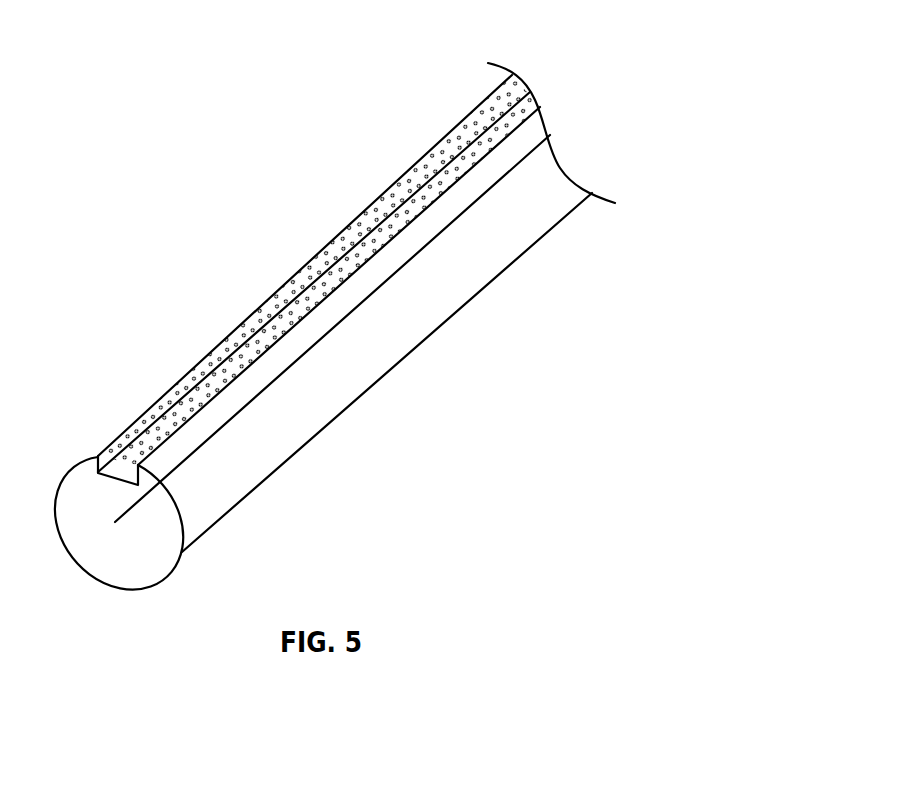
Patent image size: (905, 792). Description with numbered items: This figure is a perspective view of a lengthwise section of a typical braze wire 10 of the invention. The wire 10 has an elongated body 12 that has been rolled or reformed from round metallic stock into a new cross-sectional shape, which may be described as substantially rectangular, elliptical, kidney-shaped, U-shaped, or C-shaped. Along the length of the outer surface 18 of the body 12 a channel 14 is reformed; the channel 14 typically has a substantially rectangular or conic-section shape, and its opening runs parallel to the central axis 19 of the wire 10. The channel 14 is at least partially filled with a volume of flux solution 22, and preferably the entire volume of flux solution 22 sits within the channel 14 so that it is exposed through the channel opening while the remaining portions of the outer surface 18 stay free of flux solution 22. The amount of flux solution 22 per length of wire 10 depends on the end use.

The wire 10 is at (122, 181).
The elongated body 12 is at (500, 274).
The channel 14 is at (99, 457).
The outer surface 18 is at (224, 490).
The central axis 19 is at (312, 350).
The flux solution 22 is at (187, 400).